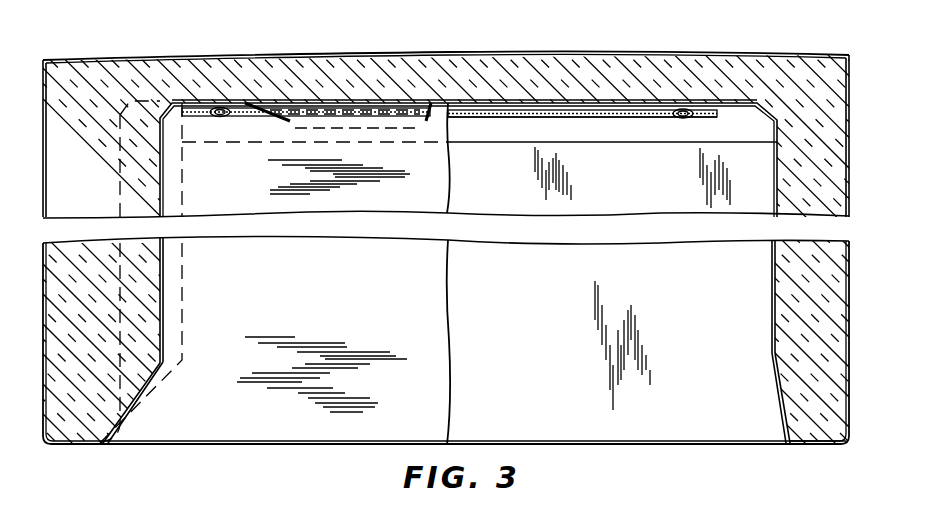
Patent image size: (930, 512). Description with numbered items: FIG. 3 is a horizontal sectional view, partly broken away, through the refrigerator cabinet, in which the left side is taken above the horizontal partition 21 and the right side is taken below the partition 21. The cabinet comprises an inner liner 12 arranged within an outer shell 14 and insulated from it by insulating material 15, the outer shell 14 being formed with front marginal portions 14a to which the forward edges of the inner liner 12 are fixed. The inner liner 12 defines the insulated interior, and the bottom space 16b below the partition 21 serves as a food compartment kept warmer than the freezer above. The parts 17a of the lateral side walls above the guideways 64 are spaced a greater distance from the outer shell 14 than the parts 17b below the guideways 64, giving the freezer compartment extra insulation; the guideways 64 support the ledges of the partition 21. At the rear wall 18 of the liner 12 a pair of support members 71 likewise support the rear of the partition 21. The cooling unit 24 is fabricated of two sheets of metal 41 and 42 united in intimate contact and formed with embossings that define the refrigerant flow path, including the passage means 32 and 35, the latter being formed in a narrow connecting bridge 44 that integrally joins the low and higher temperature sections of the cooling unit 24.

The outer shell 14 is at (43, 68).
The front marginal portions 14a is at (833, 446).
The insulating material 15 is at (275, 60).
The passage means 35 is at (217, 109).
The rear wall 18 is at (367, 100).
The sheet of metal 41 is at (627, 110).
The sheet of metal 42 is at (648, 119).
The passage means 32 is at (685, 111).
The connecting bridge 44 is at (188, 116).
The support members 71 is at (388, 119).
The cooling unit 24 is at (503, 122).
The parts of the lateral side walls above the guideways 17a is at (163, 281).
The parts of the lateral side walls below the guideways 17b is at (157, 372).
The guideways 64 is at (183, 318).
The horizontal partition 21 is at (283, 428).
The bottom space 16b is at (578, 397).
The inner liner 12 is at (795, 449).